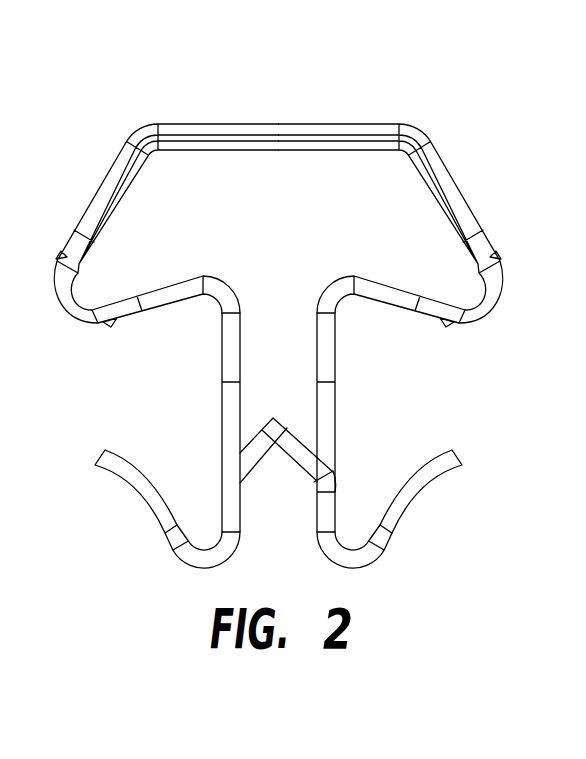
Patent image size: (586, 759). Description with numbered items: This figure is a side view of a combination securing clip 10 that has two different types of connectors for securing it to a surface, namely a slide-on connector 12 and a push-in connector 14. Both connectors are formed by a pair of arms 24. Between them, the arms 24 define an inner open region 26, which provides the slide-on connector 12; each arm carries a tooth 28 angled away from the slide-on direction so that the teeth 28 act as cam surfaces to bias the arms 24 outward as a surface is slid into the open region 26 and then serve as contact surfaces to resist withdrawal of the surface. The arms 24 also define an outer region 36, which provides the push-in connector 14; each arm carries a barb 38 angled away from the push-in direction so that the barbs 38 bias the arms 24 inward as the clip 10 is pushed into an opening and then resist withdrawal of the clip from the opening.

The combination securing clip 10 is at (279, 327).
The slide-on connector 12 is at (173, 579).
The push-in connector 14 is at (403, 423).
The arms 24 is at (317, 327).
The inner open region 26 is at (283, 535).
The teeth 28 is at (273, 418).
The outer region 36 is at (148, 399).
The barbs 38 is at (456, 467).